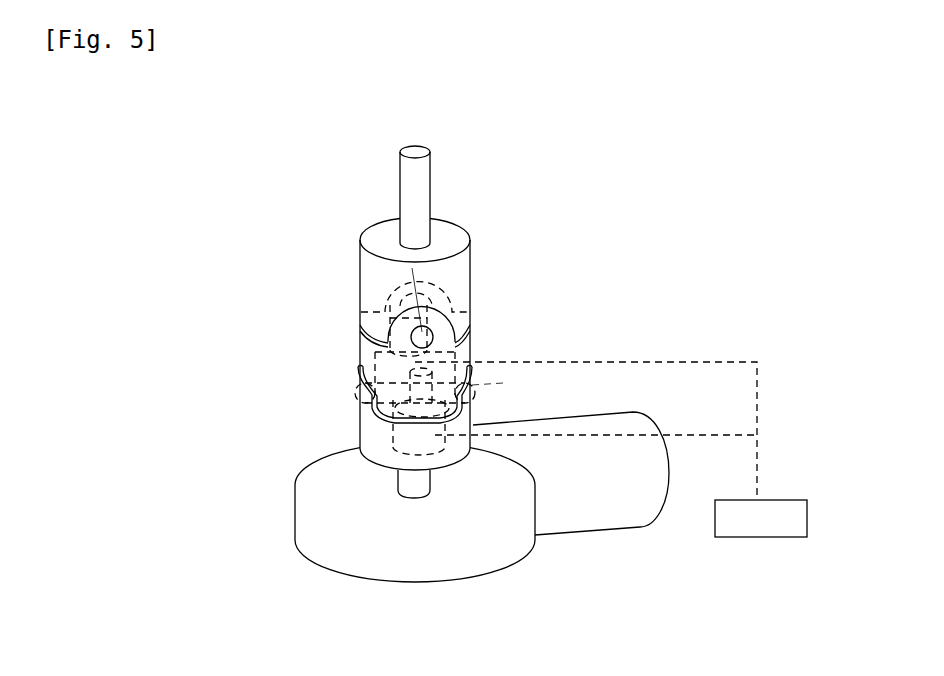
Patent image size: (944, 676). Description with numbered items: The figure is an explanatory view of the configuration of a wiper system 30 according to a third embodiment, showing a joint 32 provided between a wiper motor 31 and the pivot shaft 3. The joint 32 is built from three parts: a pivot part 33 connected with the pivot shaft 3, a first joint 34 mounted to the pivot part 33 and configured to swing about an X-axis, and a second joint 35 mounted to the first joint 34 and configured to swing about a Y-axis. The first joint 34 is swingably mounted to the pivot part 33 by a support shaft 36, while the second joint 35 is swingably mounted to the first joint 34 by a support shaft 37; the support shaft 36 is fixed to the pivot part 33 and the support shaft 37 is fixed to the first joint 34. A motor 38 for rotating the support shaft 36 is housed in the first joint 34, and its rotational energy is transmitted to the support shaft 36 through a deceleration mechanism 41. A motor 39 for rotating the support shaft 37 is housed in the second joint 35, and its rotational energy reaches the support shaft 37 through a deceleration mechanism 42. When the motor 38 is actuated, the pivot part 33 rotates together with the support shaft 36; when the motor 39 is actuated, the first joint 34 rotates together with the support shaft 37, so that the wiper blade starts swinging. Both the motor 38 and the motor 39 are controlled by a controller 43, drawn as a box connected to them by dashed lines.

The pivot shaft 3 is at (425, 172).
The wiper system 30 is at (645, 312).
The wiper motor 31 is at (505, 553).
The joint 32 is at (350, 322).
The pivot part 33 is at (460, 264).
The first joint 34 is at (463, 353).
The second joint 35 is at (367, 425).
The support shaft 36 is at (470, 328).
The support shaft 37 is at (370, 393).
The motor 38 is at (360, 355).
The motor 39 is at (405, 447).
The deceleration mechanism 41 is at (453, 310).
The deceleration mechanism 42 is at (470, 394).
The controller 43 is at (777, 527).